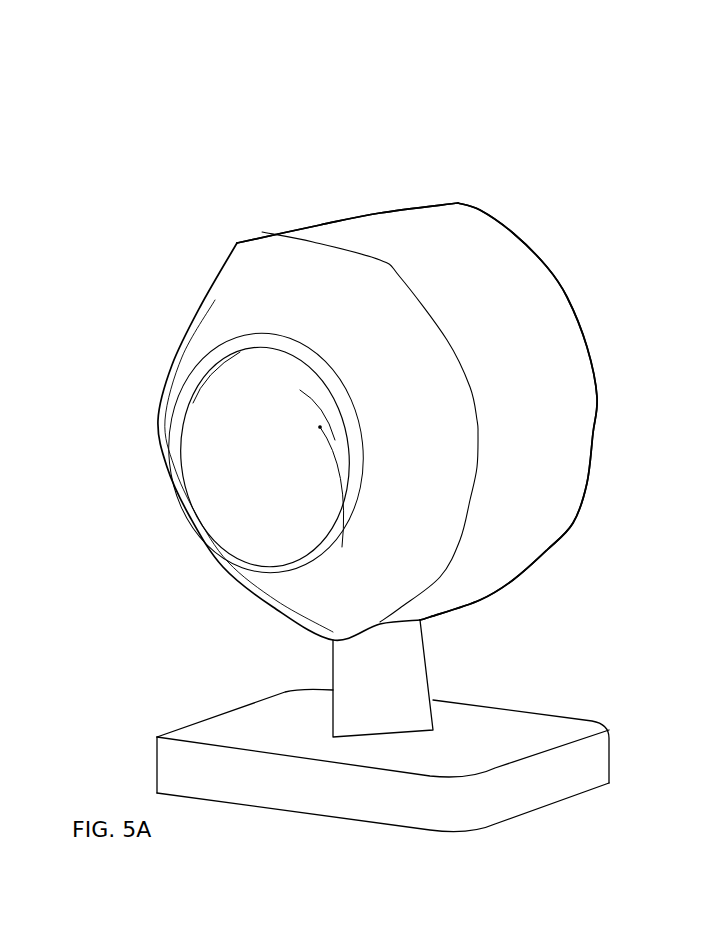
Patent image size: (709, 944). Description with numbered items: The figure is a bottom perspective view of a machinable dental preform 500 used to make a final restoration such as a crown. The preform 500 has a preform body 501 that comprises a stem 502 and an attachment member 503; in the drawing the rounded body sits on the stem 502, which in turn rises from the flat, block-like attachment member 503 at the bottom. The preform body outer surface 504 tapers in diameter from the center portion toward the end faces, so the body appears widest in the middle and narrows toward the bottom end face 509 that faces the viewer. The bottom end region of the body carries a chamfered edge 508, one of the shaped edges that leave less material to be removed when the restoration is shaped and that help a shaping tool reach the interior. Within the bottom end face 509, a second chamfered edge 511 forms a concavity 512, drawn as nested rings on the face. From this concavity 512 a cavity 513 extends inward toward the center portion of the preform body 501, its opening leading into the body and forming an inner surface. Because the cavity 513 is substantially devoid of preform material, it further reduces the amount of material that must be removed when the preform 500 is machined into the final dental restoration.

The preform 500 is at (503, 138).
The preform body 501 is at (538, 288).
The stem 502 is at (402, 624).
The attachment member 503 is at (267, 737).
The preform body outer surface 504 is at (362, 213).
The chamfered edge 508 is at (288, 270).
The bottom end face 509 is at (217, 288).
The second chamfered edge 511 is at (210, 355).
The concavity 512 is at (190, 382).
The cavity 513 is at (320, 427).